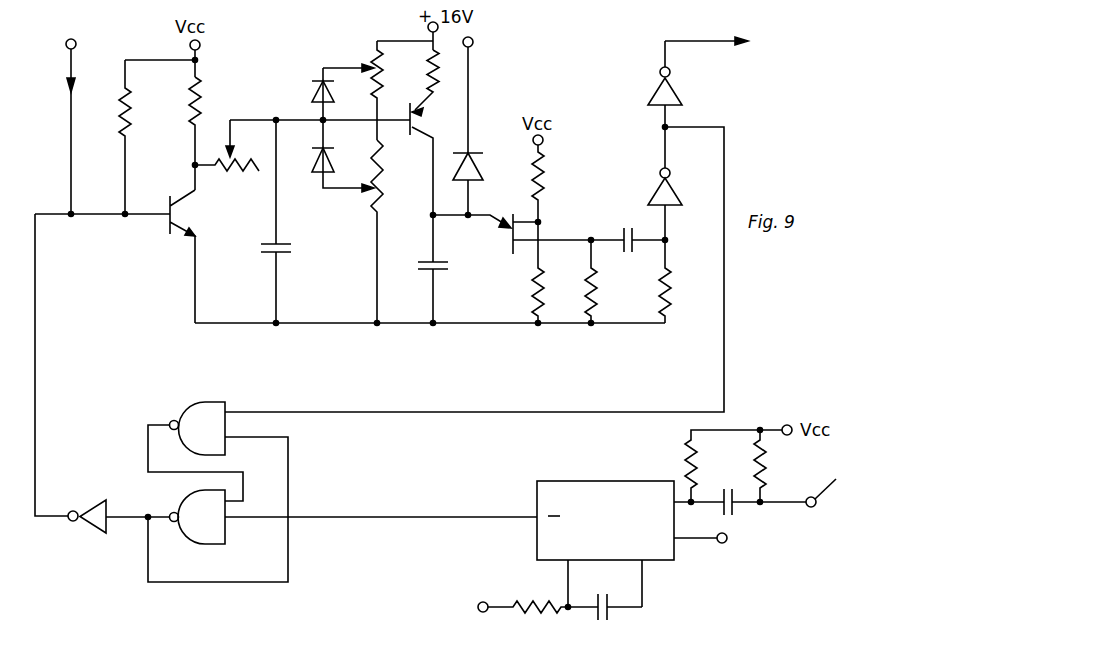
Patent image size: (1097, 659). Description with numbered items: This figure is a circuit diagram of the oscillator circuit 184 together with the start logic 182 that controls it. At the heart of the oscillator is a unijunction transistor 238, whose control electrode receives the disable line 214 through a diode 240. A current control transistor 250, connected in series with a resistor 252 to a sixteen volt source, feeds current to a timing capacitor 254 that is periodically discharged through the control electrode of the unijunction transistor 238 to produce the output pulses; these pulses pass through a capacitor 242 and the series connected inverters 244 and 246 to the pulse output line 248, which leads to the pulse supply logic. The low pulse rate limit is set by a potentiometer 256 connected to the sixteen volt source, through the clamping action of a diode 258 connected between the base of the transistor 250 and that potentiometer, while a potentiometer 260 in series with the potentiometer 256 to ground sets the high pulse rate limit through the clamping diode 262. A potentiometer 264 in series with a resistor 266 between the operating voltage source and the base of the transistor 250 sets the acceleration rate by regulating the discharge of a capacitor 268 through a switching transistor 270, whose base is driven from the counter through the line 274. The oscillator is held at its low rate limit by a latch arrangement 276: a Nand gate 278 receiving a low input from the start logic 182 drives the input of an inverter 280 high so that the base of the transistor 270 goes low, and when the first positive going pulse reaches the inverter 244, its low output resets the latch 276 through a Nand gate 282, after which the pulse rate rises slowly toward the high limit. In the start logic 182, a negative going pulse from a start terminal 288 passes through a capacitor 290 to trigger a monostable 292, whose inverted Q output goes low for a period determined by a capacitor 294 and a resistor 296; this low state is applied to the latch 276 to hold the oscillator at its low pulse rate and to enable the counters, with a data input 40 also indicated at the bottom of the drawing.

The line 274 is at (70, 131).
The resistor 266 is at (201, 94).
The potentiometer 264 is at (238, 172).
The switching transistor 270 is at (180, 224).
The capacitor 268 is at (262, 251).
The diode 258 is at (313, 93).
The diode 262 is at (316, 173).
The potentiometer 256 is at (372, 62).
The potentiometer 260 is at (373, 200).
The resistor 252 is at (437, 57).
The current control transistor 250 is at (421, 136).
The timing capacitor 254 is at (418, 268).
The disable line 214 is at (470, 96).
The diode 240 is at (479, 168).
The unijunction transistor 238 is at (510, 249).
The capacitor 242 is at (630, 207).
The inverter 244 is at (656, 186).
The inverter 246 is at (676, 90).
The pulse output line 248 is at (705, 43).
The oscillator circuit 184 is at (578, 86).
The inverter 280 is at (92, 501).
The Nand gate 282 is at (207, 408).
The Nand gate 278 is at (216, 536).
The latch arrangement 276 is at (212, 594).
The monostable 292 is at (630, 516).
The start terminal 288 is at (829, 484).
The capacitor 290 is at (730, 514).
The capacitor 294 is at (606, 623).
The resistor 296 is at (528, 601).
The start logic 182 is at (757, 618).
The data input 40 is at (292, 655).